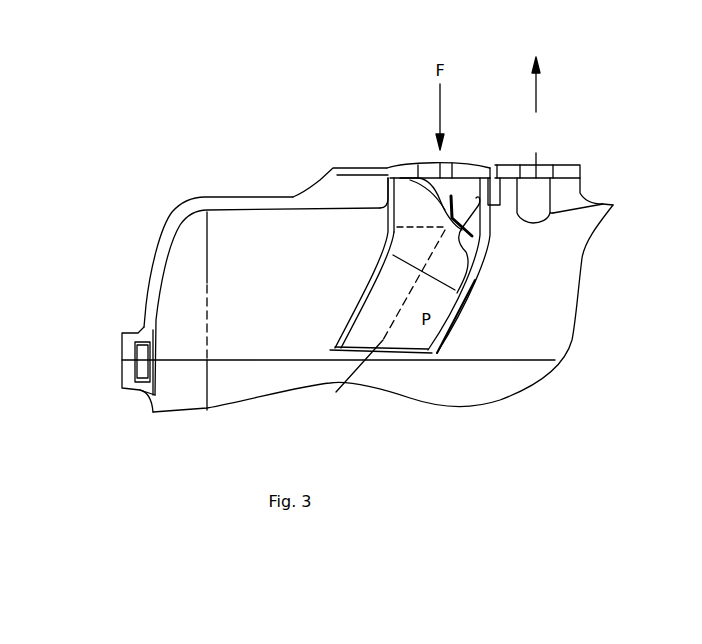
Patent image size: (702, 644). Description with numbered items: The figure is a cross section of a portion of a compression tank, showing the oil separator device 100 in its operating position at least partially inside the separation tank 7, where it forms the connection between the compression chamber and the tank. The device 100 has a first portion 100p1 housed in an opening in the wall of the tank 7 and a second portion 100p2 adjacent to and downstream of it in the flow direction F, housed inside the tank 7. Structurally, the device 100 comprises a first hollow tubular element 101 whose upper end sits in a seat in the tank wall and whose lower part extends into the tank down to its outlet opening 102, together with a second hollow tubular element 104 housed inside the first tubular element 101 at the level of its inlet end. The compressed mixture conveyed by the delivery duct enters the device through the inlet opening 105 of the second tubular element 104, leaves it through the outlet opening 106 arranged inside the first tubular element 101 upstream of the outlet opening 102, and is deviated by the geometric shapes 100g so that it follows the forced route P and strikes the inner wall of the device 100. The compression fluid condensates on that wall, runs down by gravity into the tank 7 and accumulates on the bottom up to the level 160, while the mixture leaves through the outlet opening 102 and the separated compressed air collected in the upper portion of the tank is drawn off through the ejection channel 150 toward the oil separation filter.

The separation tank 7 is at (175, 307).
The oil separator device 100 is at (517, 277).
The geometric shapes 100g is at (425, 203).
The first portion 100p1 is at (495, 170).
The second portion 100p2 is at (462, 310).
The first hollow tubular element 101 is at (370, 281).
The outlet opening 102 is at (362, 352).
The second hollow tubular element 104 is at (387, 170).
The inlet opening 105 is at (443, 205).
The outlet opening 106 is at (458, 226).
The ejection channel 150 is at (548, 222).
The level 160 is at (190, 360).